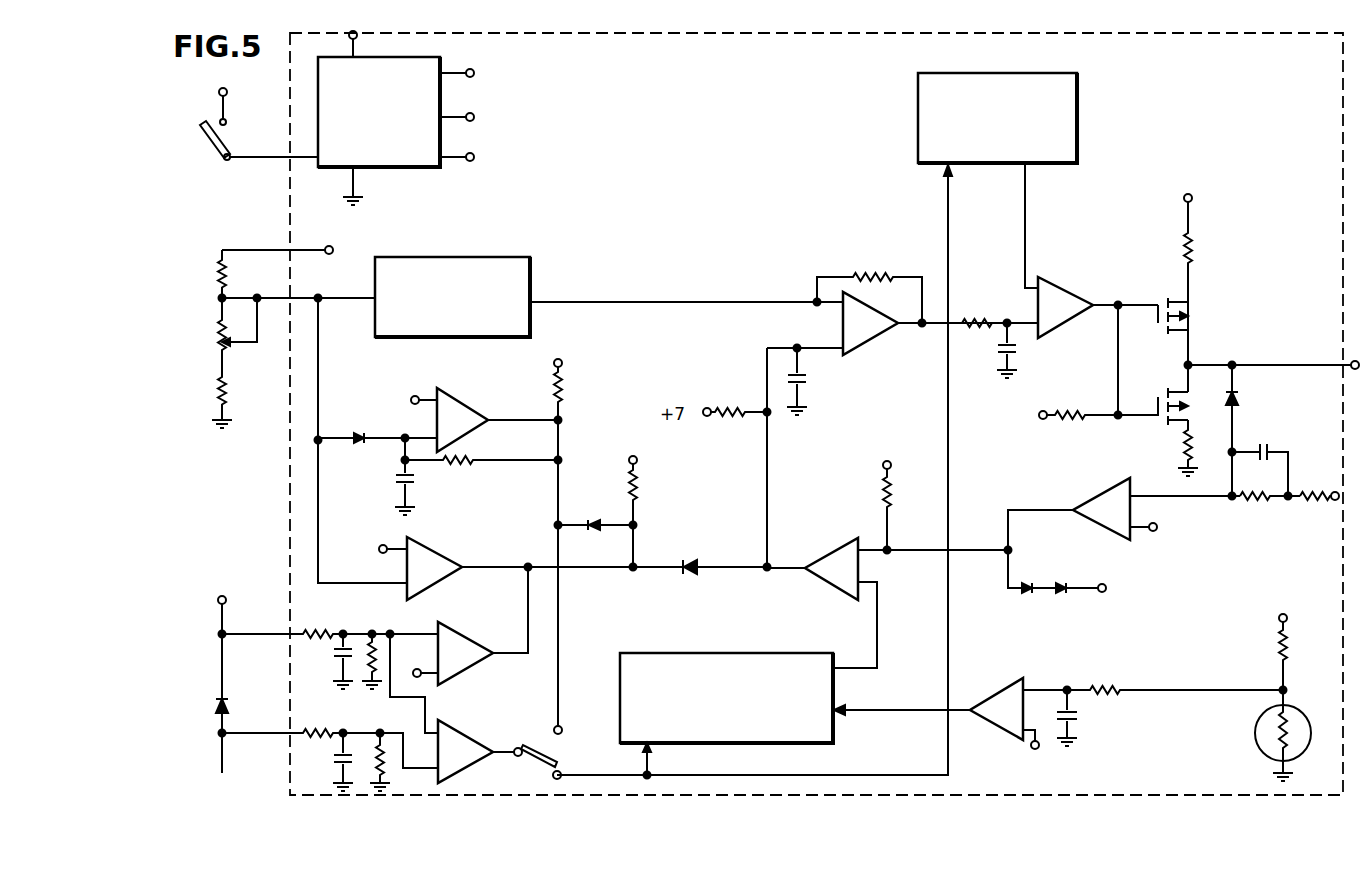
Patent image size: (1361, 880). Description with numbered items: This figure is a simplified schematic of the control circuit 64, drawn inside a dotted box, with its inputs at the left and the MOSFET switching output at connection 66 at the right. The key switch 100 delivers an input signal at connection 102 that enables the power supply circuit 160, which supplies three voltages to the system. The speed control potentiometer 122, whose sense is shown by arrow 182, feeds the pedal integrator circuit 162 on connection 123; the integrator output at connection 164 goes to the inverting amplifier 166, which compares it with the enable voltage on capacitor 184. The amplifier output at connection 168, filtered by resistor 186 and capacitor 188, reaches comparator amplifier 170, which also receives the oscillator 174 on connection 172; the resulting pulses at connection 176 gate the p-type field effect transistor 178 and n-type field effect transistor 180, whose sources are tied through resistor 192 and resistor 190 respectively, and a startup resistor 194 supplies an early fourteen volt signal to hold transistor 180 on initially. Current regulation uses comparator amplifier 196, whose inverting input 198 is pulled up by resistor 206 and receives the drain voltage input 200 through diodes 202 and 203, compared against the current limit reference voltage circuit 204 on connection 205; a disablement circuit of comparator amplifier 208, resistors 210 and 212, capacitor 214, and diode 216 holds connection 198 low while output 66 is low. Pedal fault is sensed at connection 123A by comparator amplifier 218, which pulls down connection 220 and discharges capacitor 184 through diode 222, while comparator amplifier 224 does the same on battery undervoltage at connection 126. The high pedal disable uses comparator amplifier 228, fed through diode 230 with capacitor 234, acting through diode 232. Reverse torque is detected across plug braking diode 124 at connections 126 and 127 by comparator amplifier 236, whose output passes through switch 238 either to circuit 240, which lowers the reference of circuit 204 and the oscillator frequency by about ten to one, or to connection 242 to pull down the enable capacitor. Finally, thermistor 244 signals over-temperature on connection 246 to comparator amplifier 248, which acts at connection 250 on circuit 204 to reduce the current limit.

The control circuit 64 is at (748, 87).
The MOSFET control output connection 66 is at (1352, 364).
The key switch 100 is at (232, 150).
The input signal connection from key switch 102 is at (272, 158).
The speed control potentiometer 122 is at (228, 348).
The pedal signal connection 123 is at (303, 299).
The pedal fault connection 123A is at (321, 520).
The plug braking diode 124 is at (232, 718).
The battery voltage connection 126 is at (270, 632).
The diode connection 127 is at (270, 734).
The power supply circuit 160 is at (410, 167).
The pedal integrator circuit 162 is at (478, 257).
The pedal integrator output connection 164 is at (632, 302).
The inverting amplifier 166 is at (843, 328).
The amplifier output connection 168 is at (1021, 322).
The comparator amplifier 170 is at (1068, 288).
The oscillator connection 172 is at (1025, 202).
The oscillator 174 is at (1010, 73).
The comparator output connection 176 is at (1107, 308).
The p-type field effect transistor 178 is at (1206, 315).
The n-type field effect transistor 180 is at (1175, 381).
The arrow 182 is at (202, 368).
The enable capacitor 184 is at (806, 376).
The filter resistor 186 is at (985, 326).
The filter capacitor 188 is at (1002, 356).
The source resistor 190 is at (1185, 444).
The source resistor 192 is at (1197, 250).
The startup resistor 194 is at (1073, 412).
The comparator amplifier 196 is at (833, 544).
The inverting input connection 198 is at (981, 548).
The drain voltage input 200 is at (1106, 588).
The diode 202 is at (1042, 598).
The diode 203 is at (1076, 563).
The current limit reference voltage circuit 204 is at (784, 653).
The reference voltage connection 205 is at (880, 624).
The pull-up resistor 206 is at (880, 502).
The comparator amplifier 208 is at (1100, 492).
The resistor 210 is at (1263, 500).
The resistor 212 is at (1322, 500).
The capacitor 214 is at (1266, 449).
The diode 216 is at (1237, 394).
The comparator amplifier 218 is at (433, 549).
The disable connection 220 is at (645, 566).
The diode 222 is at (699, 565).
The comparator amplifier 224 is at (457, 636).
The comparator amplifier 228 is at (452, 397).
The diode 230 is at (362, 437).
The diode 232 is at (603, 510).
The capacitor 234 is at (400, 472).
The comparator amplifier 236 is at (445, 736).
The switch 238 is at (526, 769).
The reverse torque control circuit 240 is at (946, 209).
The connection 242 is at (564, 630).
The thermistor 244 is at (1252, 745).
The temperature signal connection 246 is at (1192, 690).
The comparator amplifier 248 is at (1004, 686).
The temperature limit connection 250 is at (918, 709).